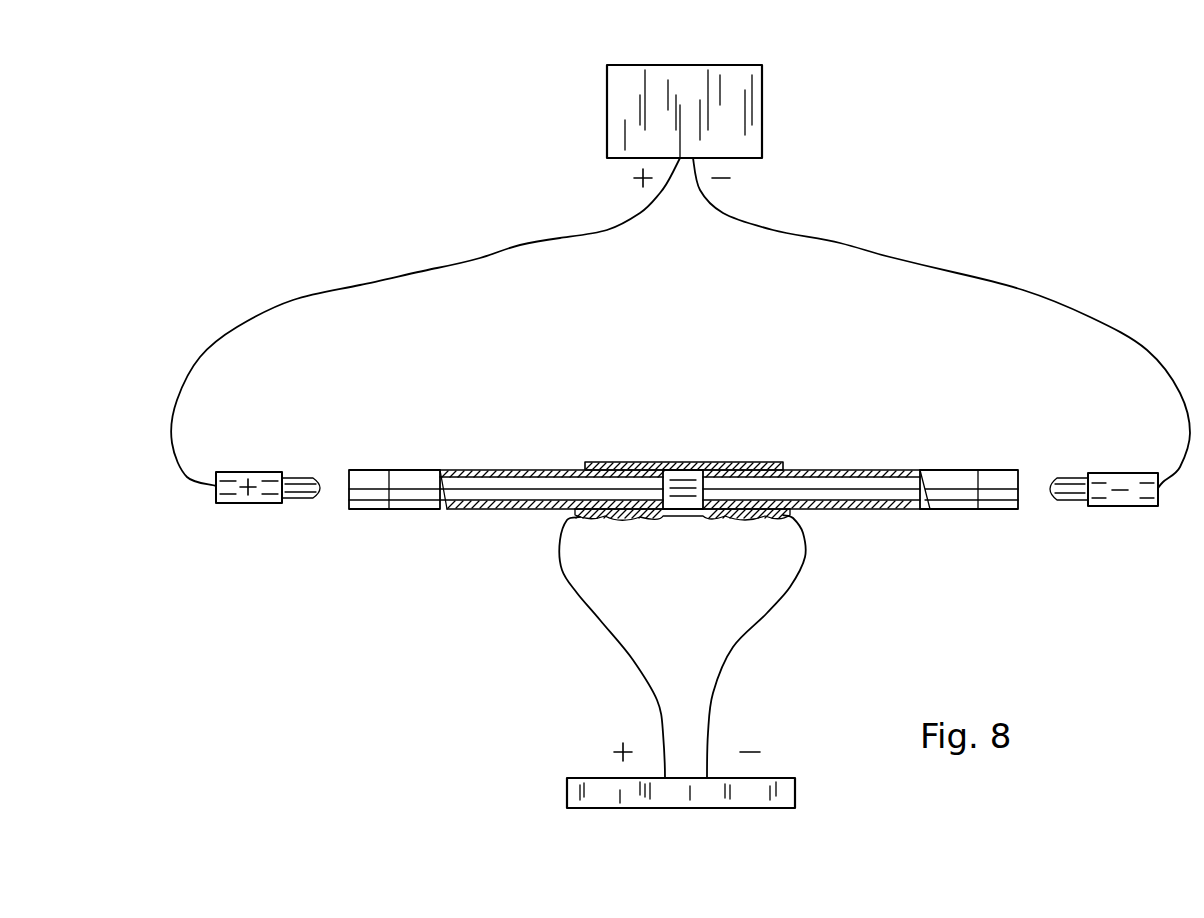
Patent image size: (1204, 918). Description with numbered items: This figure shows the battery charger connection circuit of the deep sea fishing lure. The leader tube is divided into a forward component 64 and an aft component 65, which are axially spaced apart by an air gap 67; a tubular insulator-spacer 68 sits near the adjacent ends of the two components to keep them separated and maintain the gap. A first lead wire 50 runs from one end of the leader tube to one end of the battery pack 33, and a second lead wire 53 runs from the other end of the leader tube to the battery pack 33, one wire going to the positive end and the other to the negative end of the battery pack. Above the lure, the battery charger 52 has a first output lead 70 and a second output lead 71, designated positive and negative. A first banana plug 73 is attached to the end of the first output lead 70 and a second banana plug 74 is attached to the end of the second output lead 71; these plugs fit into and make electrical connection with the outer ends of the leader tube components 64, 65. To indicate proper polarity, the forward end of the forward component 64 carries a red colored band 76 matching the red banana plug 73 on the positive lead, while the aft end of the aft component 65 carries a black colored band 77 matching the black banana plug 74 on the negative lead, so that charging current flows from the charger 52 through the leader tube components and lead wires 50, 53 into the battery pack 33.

The battery charger 52 is at (765, 118).
The first output lead 70 is at (478, 258).
The second output lead 71 is at (988, 280).
The first banana plug 73 is at (252, 505).
The second banana plug 74 is at (1120, 508).
The red colored band 76 is at (360, 512).
The black colored band 77 is at (1004, 470).
The forward component 64 is at (477, 468).
The aft component 65 is at (851, 470).
The tubular insulator-spacer 68 is at (634, 462).
The air gap 67 is at (688, 512).
The first lead wire 50 is at (577, 598).
The second lead wire 53 is at (790, 600).
The battery pack 33 is at (596, 778).